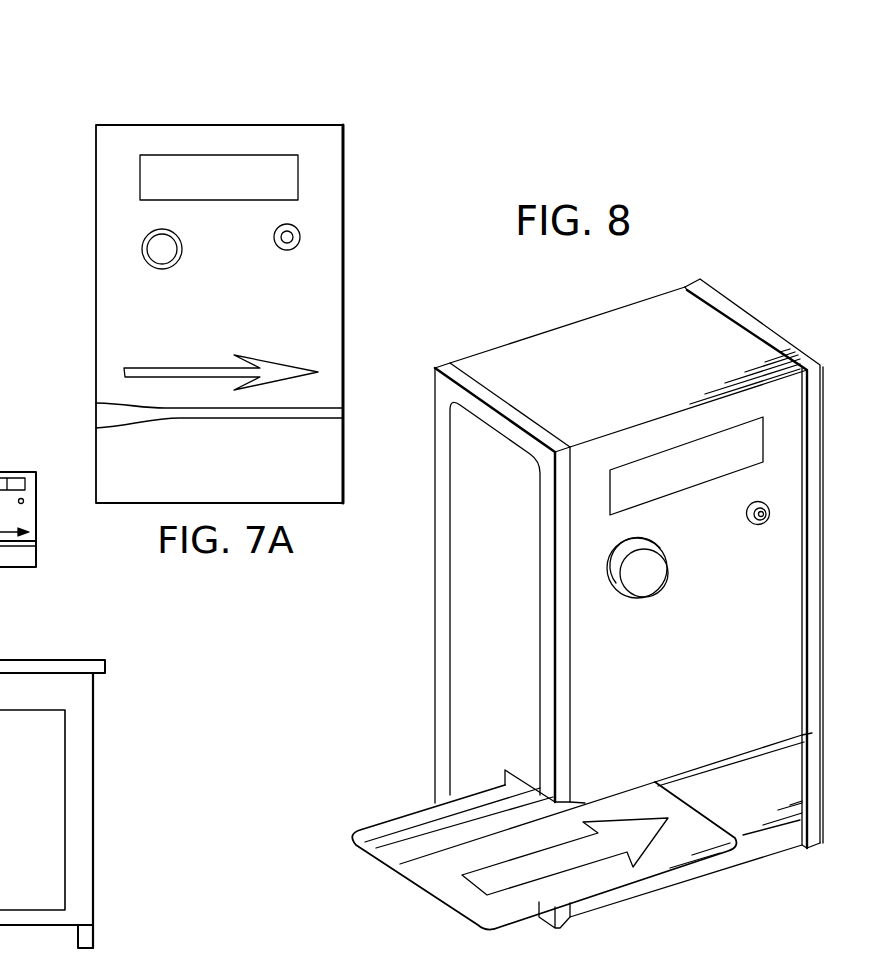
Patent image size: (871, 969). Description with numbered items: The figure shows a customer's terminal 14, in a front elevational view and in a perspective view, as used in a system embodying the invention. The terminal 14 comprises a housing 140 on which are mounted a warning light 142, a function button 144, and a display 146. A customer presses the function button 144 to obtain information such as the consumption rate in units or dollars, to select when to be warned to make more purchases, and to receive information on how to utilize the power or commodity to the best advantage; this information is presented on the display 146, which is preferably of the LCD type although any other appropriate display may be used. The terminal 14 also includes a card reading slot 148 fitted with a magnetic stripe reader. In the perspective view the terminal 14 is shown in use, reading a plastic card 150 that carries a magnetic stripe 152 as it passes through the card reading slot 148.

In FIG. 7A, the customer terminal 14 is at (357, 151).
In FIG. 8, the customer terminal 14 is at (561, 305).
In FIG. 7A, the housing 140 is at (295, 124).
In FIG. 8, the housing 140 is at (478, 355).
In FIG. 7A, the warning light 142 is at (294, 236).
In FIG. 8, the warning light 142 is at (768, 513).
In FIG. 7A, the function button 144 is at (160, 248).
In FIG. 8, the function button 144 is at (630, 588).
In FIG. 7A, the display 146 is at (140, 190).
In FIG. 8, the display 146 is at (757, 445).
In FIG. 7A, the card reading slot 148 is at (94, 413).
In FIG. 8, the card reading slot 148 is at (812, 733).
In FIG. 8, the plastic card 150 is at (400, 817).
In FIG. 8, the magnetic stripe 152 is at (397, 856).